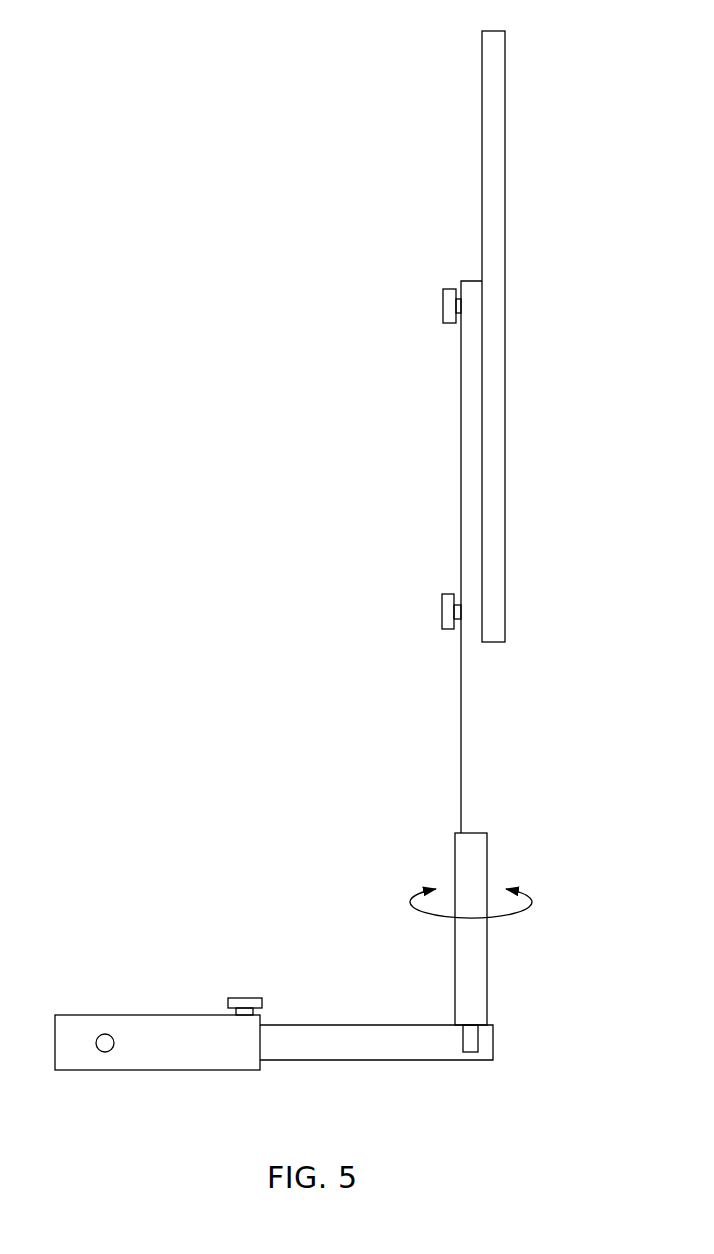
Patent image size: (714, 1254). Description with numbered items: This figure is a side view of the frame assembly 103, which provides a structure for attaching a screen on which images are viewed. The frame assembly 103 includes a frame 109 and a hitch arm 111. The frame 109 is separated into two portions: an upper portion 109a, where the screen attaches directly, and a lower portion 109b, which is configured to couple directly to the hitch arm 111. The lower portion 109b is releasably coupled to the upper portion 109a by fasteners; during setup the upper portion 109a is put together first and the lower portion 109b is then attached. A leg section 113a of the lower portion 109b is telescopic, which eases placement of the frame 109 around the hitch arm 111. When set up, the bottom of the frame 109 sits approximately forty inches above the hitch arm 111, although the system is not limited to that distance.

The frame assembly 103 is at (146, 336).
The frame 109 is at (364, 562).
The upper portion 109a is at (506, 195).
The lower portion 109b is at (457, 720).
The hitch arm 111 is at (295, 976).
The leg section 113a is at (485, 790).